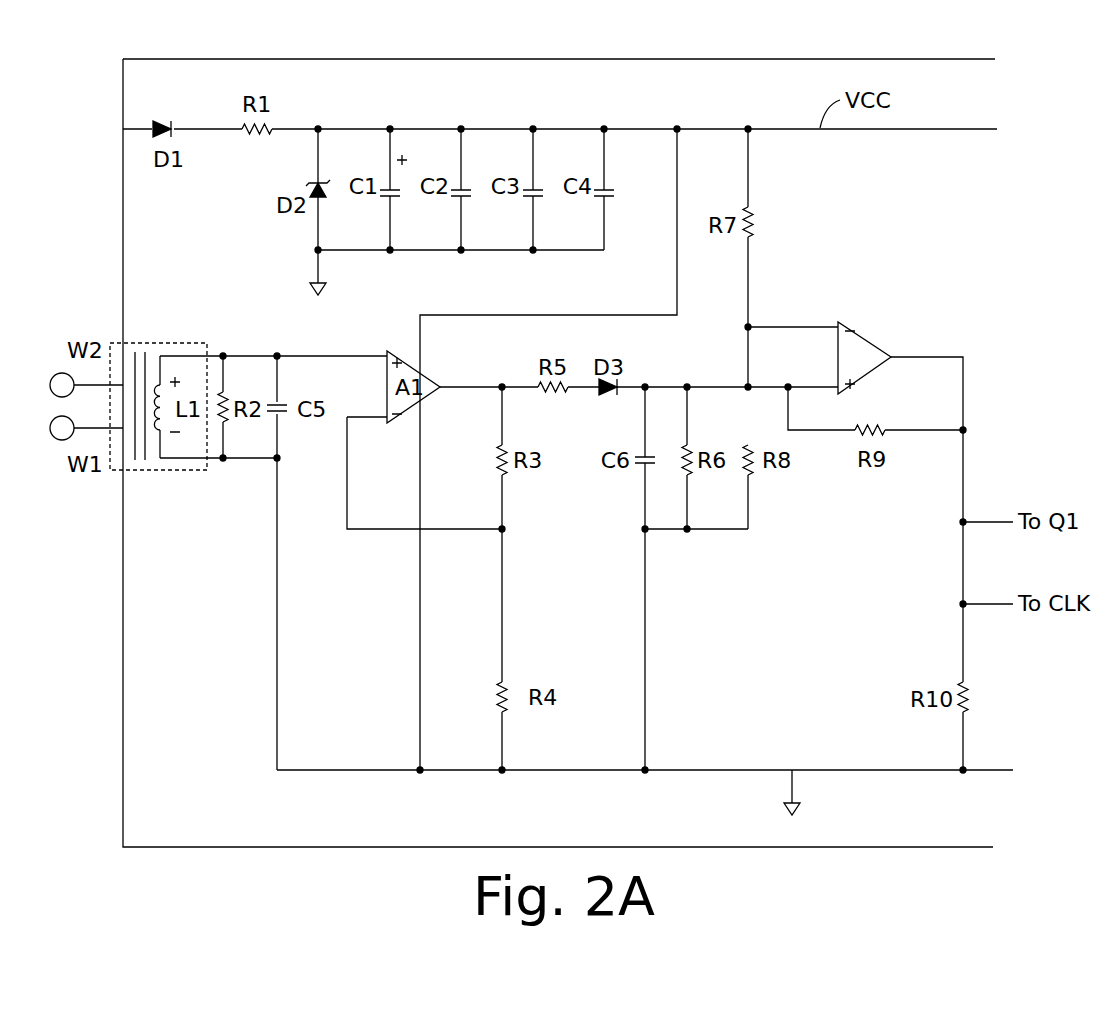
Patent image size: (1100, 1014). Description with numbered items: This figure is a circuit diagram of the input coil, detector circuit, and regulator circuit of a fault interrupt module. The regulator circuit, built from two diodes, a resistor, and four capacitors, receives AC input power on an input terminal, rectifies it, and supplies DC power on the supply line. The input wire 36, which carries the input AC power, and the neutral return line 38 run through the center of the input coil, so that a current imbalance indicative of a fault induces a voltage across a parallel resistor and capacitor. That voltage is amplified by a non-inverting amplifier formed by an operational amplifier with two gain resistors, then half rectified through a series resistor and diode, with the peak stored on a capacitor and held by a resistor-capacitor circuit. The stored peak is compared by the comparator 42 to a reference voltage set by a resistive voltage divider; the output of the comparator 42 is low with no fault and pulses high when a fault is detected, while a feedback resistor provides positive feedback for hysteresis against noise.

The input wire 36 is at (338, 59).
The neutral return line 38 is at (243, 847).
The comparator 42 is at (862, 332).